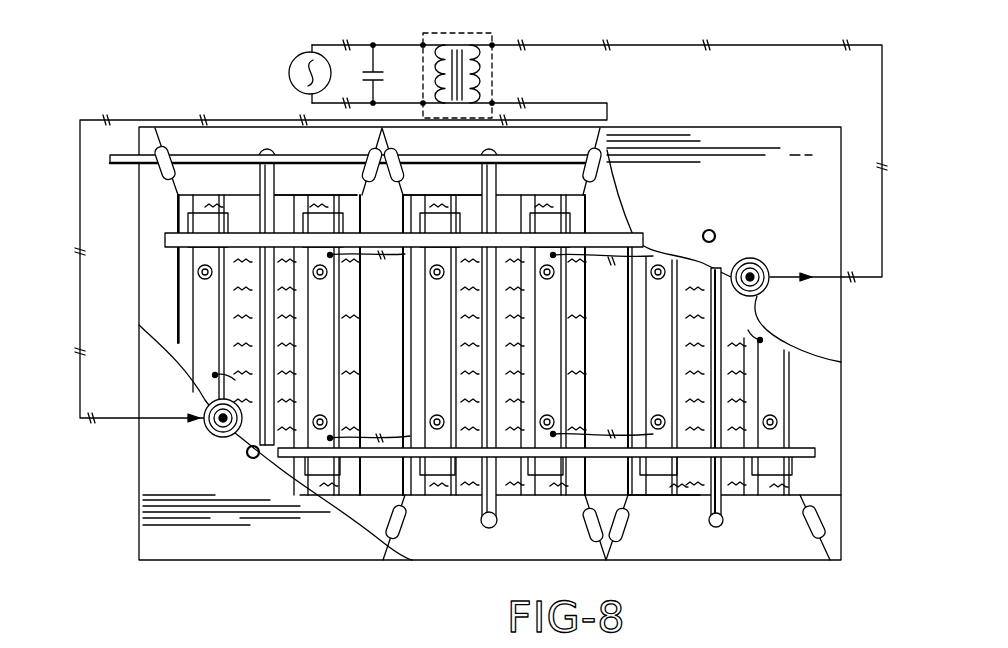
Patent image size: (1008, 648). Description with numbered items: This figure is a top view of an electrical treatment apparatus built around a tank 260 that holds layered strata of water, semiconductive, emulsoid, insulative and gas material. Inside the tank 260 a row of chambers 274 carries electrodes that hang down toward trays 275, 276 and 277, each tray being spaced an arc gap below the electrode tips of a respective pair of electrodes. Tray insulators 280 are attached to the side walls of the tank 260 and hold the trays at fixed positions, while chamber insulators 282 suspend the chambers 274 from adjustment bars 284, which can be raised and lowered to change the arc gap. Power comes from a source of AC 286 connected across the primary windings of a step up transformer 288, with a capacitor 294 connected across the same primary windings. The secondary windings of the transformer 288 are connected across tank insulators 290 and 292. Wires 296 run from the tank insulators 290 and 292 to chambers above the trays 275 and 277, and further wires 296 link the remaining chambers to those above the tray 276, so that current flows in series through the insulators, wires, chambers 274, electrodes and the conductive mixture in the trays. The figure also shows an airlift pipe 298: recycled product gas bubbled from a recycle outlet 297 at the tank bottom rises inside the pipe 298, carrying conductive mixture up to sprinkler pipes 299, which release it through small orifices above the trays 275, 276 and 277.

The tank 260 is at (742, 136).
The chamber 274 is at (340, 357).
The tray 275 is at (340, 200).
The tray 276 is at (470, 195).
The tray 277 is at (673, 490).
The tray insulator 280 is at (175, 170).
The chamber insulator 282 is at (410, 222).
The adjustment bar 284 is at (637, 238).
The source of AC 286 is at (291, 73).
The step up transformer 288 is at (490, 72).
The tank insulator 290 is at (232, 450).
The tank insulator 292 is at (757, 262).
The capacitor 294 is at (366, 58).
The wire 296 is at (366, 257).
The recycle outlet 297 is at (130, 165).
The airlift pipe 298 is at (259, 152).
The sprinkler pipe 299 is at (528, 146).